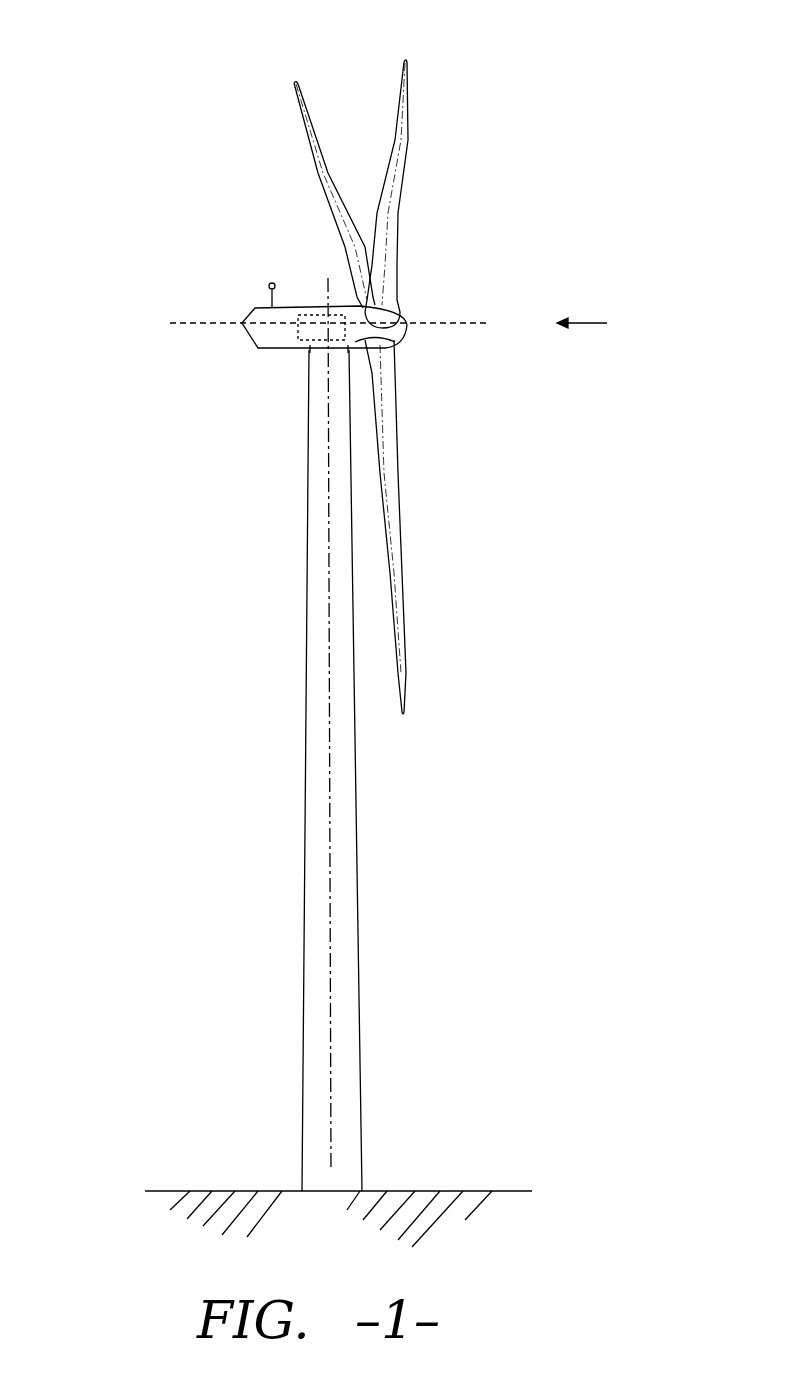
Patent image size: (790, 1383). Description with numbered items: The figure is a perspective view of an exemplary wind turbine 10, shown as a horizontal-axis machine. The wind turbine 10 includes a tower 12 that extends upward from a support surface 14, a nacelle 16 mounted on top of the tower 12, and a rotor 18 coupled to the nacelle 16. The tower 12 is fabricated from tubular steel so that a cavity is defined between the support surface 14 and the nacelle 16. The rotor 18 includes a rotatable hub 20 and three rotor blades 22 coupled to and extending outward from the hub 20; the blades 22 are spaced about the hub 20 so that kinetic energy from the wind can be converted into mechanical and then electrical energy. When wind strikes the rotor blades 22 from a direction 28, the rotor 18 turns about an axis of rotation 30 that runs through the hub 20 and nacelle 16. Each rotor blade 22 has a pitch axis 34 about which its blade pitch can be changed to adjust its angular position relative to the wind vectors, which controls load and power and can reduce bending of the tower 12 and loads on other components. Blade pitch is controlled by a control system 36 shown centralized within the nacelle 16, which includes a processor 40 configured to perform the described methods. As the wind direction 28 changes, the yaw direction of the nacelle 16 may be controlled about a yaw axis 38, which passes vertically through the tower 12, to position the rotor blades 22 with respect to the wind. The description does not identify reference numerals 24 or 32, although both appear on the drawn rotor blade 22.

The wind turbine 10 is at (132, 85).
The tower 12 is at (305, 892).
The support surface 14 is at (228, 1191).
The nacelle 16 is at (272, 352).
The rotor 18 is at (397, 381).
The rotatable hub 20 is at (400, 307).
The rotor blade 22 is at (303, 118).
The rotor blade 24 is at (410, 103).
The direction 28 is at (607, 323).
The axis of rotation 30 is at (468, 323).
The blade root portion 32 is at (365, 348).
The pitch axis 34 is at (402, 540).
The control system 36 is at (342, 352).
The yaw axis 38 is at (332, 800).
The processor 40 is at (336, 285).